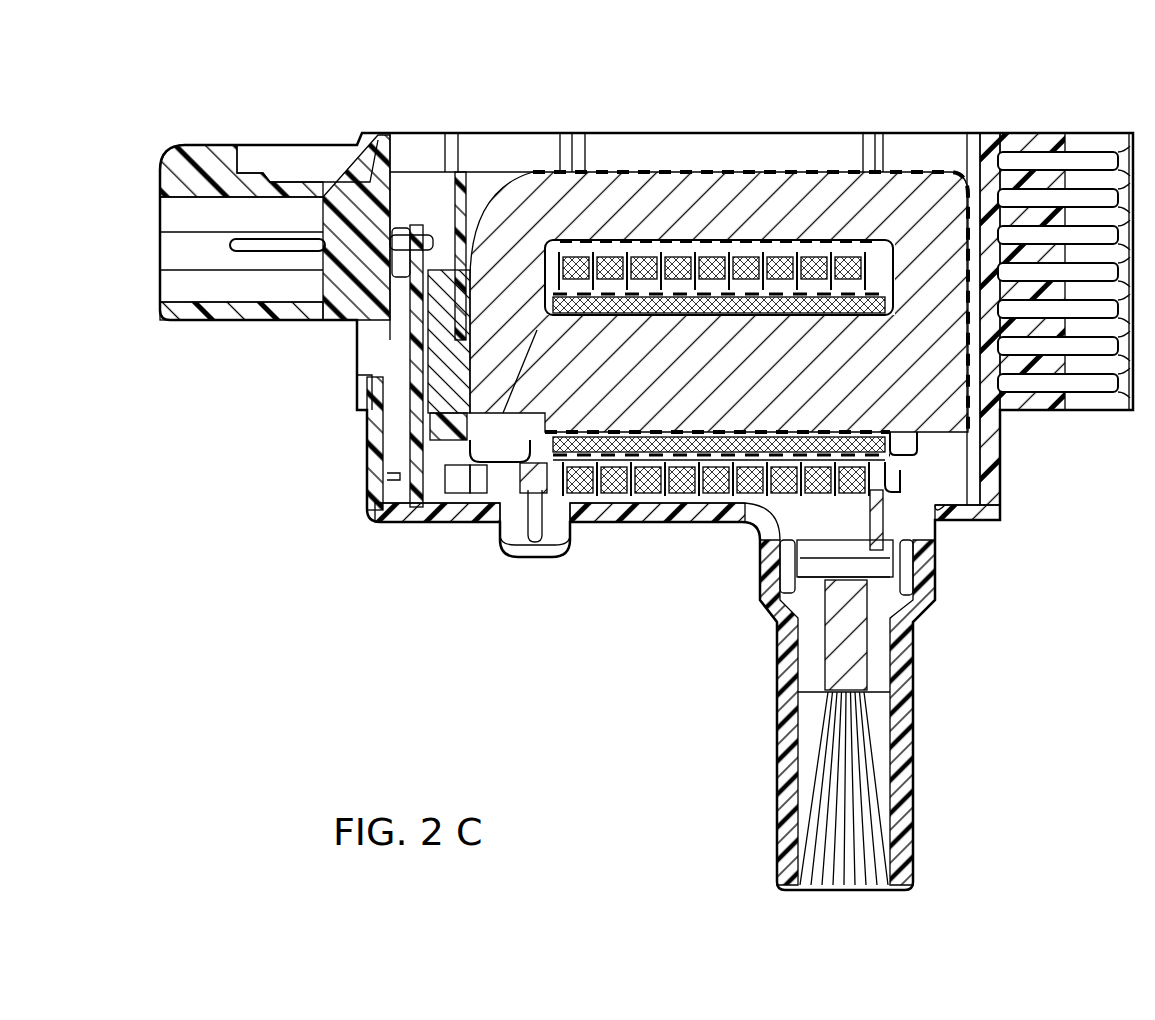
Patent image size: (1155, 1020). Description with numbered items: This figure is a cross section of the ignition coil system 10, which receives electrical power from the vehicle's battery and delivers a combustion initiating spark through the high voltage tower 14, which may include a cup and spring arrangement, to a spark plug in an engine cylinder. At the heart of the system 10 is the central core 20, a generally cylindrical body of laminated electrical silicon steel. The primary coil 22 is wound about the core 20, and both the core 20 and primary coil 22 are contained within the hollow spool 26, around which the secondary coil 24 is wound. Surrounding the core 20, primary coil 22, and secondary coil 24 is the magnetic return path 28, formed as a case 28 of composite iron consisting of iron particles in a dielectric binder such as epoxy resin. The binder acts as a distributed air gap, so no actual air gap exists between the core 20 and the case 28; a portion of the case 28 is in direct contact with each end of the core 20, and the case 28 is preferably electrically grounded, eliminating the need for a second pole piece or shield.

The ignition coil system 10 is at (326, 108).
The high voltage tower 14 is at (908, 775).
The central core 20 is at (814, 411).
The primary wire coil 22 is at (803, 518).
The secondary wire coil 24 is at (752, 487).
The hollow spool 26 is at (690, 490).
The magnetic return path 28 is at (796, 200).